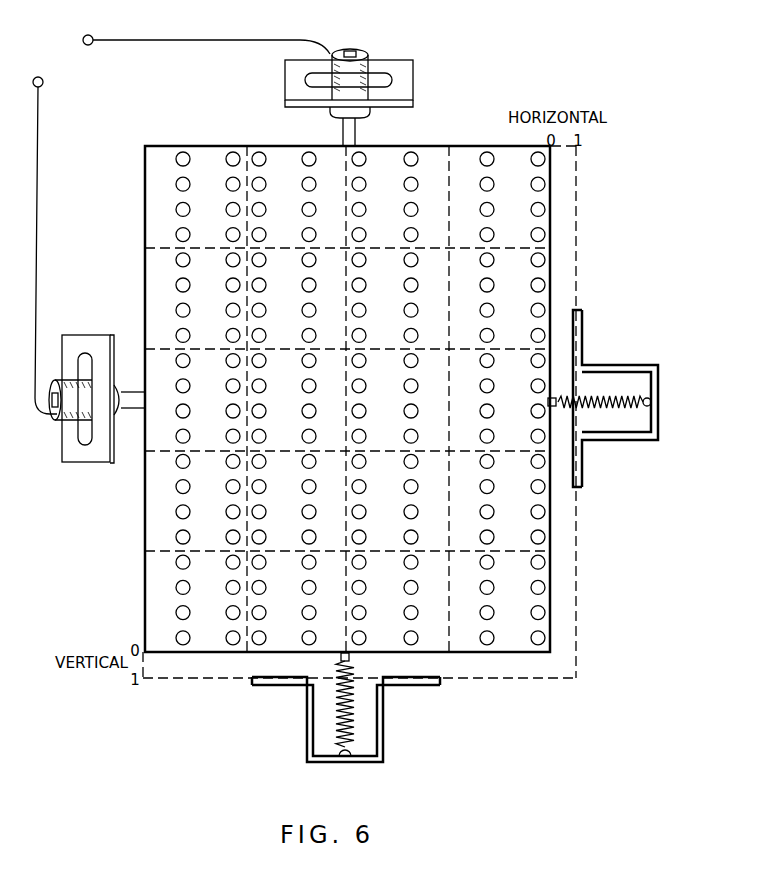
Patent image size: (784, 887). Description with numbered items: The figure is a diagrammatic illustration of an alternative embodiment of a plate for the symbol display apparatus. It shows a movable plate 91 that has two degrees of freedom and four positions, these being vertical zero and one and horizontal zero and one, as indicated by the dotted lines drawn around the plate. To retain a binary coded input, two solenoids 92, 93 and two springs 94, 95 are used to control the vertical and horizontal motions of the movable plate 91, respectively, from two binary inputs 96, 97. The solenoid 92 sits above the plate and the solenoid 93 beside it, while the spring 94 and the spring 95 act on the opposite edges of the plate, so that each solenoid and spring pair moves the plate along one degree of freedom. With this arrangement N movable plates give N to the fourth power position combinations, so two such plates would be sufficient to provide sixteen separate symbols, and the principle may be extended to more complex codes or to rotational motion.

The movable plate 91 is at (208, 152).
The solenoid 92 is at (368, 62).
The solenoid 93 is at (70, 383).
The spring 94 is at (613, 395).
The spring 95 is at (355, 712).
The binary input 96 is at (92, 35).
The binary input 97 is at (43, 81).